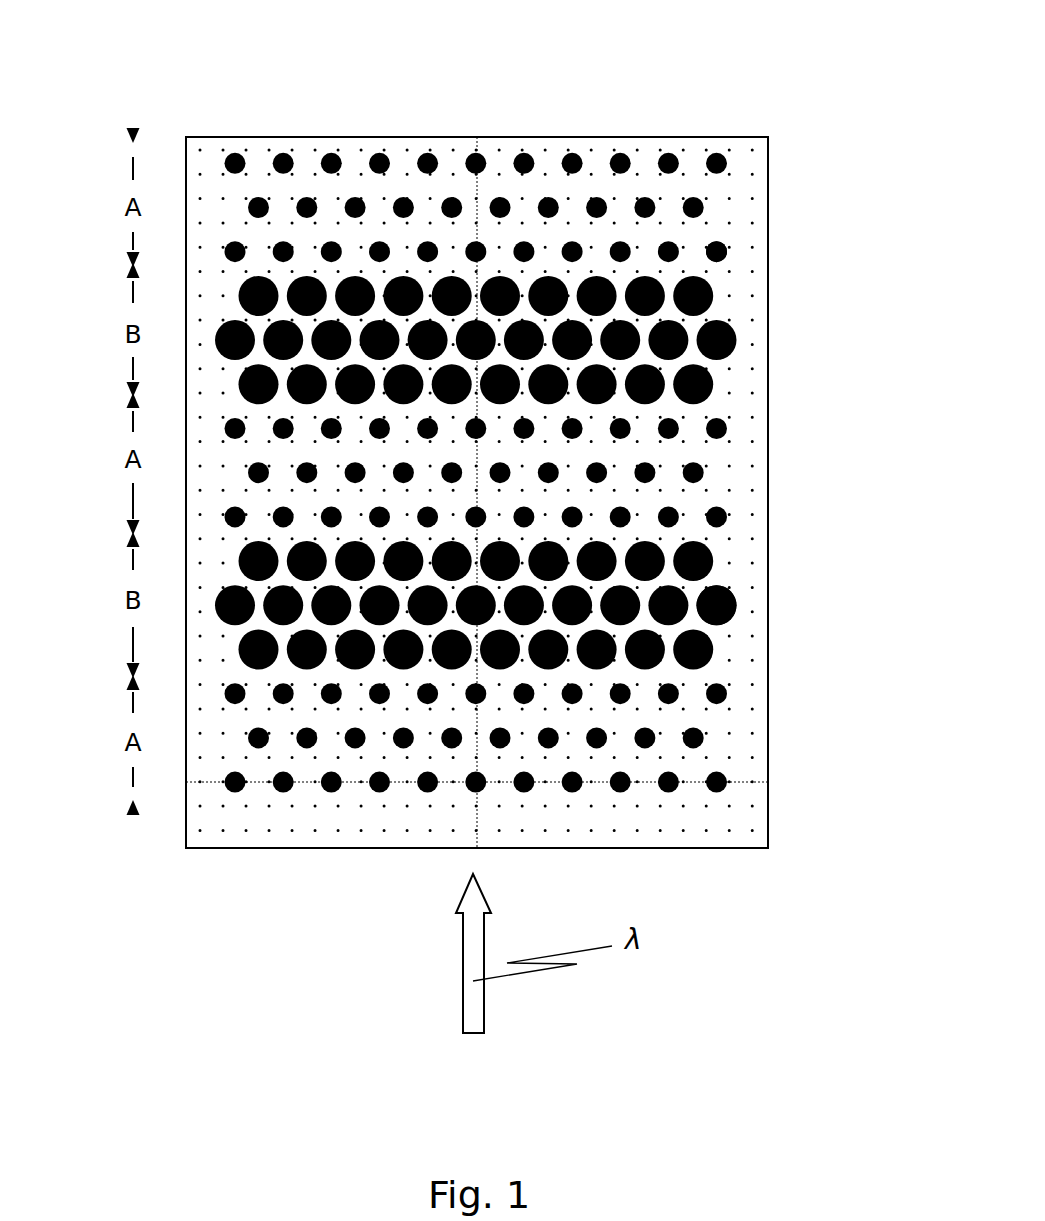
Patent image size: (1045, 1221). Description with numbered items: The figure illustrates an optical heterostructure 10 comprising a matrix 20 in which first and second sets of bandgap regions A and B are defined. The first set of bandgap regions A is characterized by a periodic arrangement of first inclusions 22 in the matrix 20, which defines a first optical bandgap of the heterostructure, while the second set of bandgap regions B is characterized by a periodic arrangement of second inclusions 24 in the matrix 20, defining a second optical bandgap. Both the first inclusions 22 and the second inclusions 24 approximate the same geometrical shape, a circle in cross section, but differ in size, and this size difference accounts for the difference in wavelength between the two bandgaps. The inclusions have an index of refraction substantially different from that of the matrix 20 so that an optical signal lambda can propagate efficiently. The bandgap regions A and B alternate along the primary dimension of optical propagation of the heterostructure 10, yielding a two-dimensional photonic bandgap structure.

The optical heterostructure 10 is at (167, 90).
The matrix 20 is at (556, 151).
The first inclusions 22 is at (804, 304).
The second inclusions 24 is at (783, 552).